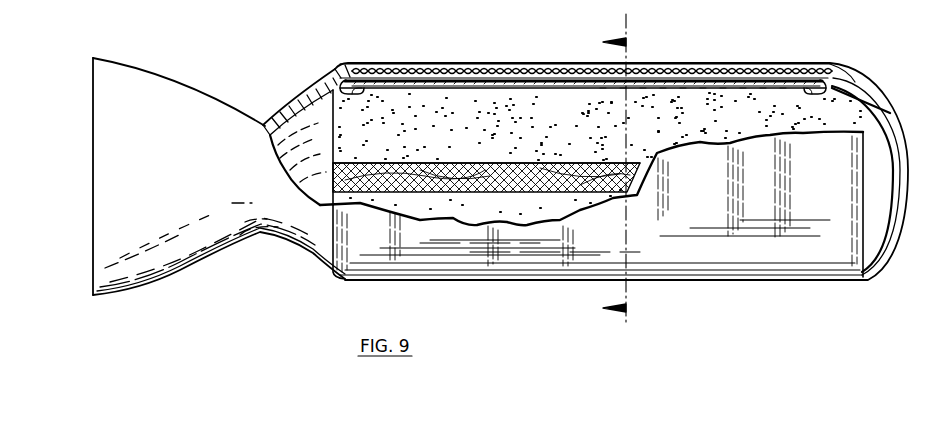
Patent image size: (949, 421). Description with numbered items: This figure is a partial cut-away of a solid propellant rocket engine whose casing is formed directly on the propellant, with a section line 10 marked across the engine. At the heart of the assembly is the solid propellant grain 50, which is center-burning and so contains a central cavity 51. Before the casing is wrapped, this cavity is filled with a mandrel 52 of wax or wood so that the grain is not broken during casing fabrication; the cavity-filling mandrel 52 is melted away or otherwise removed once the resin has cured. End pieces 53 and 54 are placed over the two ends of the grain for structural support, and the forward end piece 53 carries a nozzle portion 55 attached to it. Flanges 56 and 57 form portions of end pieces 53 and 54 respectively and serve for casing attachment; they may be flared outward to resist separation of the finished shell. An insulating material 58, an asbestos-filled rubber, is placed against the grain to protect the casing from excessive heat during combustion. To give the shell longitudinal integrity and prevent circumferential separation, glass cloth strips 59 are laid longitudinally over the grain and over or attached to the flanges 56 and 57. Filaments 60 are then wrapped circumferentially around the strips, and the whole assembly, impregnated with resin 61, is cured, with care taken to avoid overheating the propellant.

The section line 10- 10 is at (641, 42).
The solid propellant grain 50 is at (559, 130).
The central cavity 51 is at (414, 165).
The mandrel 52 is at (500, 188).
The end piece 53 is at (292, 113).
The end piece 54 is at (877, 90).
The nozzle portion 55 is at (166, 195).
The flange 56 is at (345, 93).
The flange 57 is at (847, 97).
The insulating material 58 is at (698, 81).
The glass cloth strips 59 is at (402, 66).
The filaments 60 is at (463, 67).
The resin 61 is at (512, 67).